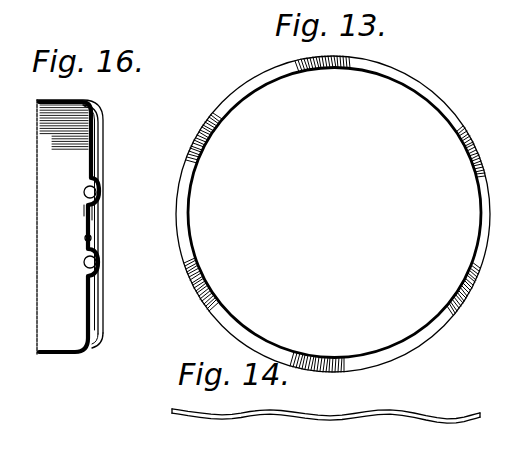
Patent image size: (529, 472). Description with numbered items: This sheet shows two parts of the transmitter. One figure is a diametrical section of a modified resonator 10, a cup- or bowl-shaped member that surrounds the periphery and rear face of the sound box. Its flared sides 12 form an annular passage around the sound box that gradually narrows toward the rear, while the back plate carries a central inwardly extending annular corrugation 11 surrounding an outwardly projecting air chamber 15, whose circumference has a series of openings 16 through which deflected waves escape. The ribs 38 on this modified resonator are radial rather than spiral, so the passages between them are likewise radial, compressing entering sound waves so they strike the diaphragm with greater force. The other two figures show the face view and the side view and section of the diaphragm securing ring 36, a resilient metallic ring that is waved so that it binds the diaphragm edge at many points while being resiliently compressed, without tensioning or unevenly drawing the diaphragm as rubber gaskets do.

In FIG. 16, the resonator 10 is at (104, 290).
In FIG. 16, the annular corrugation 11 is at (96, 268).
In FIG. 16, the flared sides 12 is at (58, 354).
In FIG. 16, the air chamber 15 is at (95, 228).
In FIG. 16, the openings 16 is at (86, 222).
In FIG. 13, the resilient metallic ring 36 is at (262, 338).
In FIG. 14, the resilient metallic ring 36 is at (328, 421).
In FIG. 16, the ribs 38 is at (100, 190).